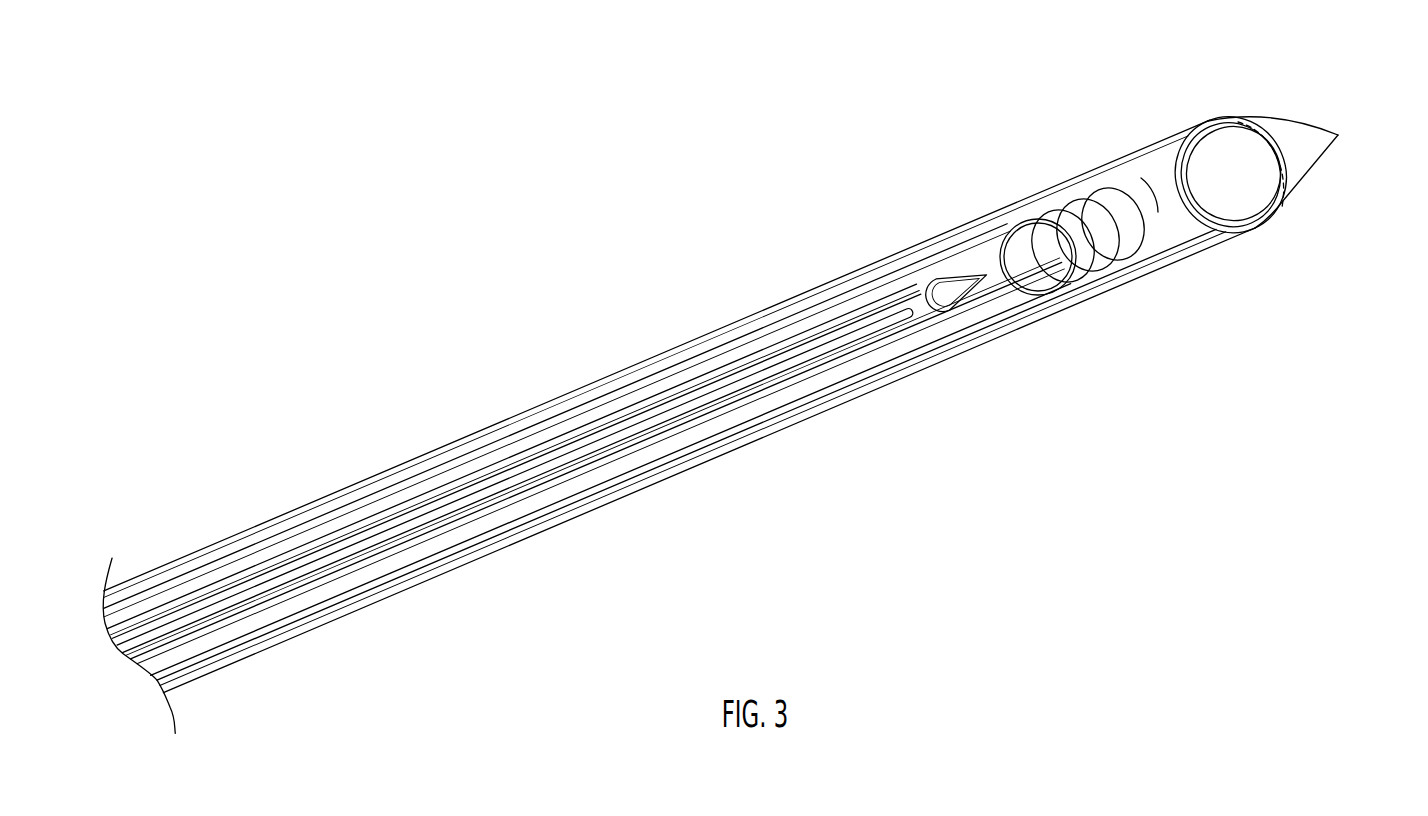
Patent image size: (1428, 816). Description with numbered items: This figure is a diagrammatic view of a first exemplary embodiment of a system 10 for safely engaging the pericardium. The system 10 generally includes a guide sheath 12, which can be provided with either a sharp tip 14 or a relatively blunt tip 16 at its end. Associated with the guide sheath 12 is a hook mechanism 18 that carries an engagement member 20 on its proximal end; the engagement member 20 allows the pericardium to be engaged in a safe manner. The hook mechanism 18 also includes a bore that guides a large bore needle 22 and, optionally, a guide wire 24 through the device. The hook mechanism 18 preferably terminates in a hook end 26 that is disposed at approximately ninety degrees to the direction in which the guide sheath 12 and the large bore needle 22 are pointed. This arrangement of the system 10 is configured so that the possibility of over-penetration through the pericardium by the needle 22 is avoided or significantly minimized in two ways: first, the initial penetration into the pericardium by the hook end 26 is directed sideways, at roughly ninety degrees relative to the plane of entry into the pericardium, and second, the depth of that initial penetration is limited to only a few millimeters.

The system 10 is at (752, 555).
The guide sheath 12 is at (1165, 267).
The sharp tip 14 is at (1303, 155).
The blunt tip 16 is at (1253, 203).
The hook mechanism 18 is at (1000, 303).
The engagement member 20 is at (1097, 268).
The large bore needle 22 is at (921, 314).
The guide wire 24 is at (700, 408).
The hook end 26 is at (1160, 208).